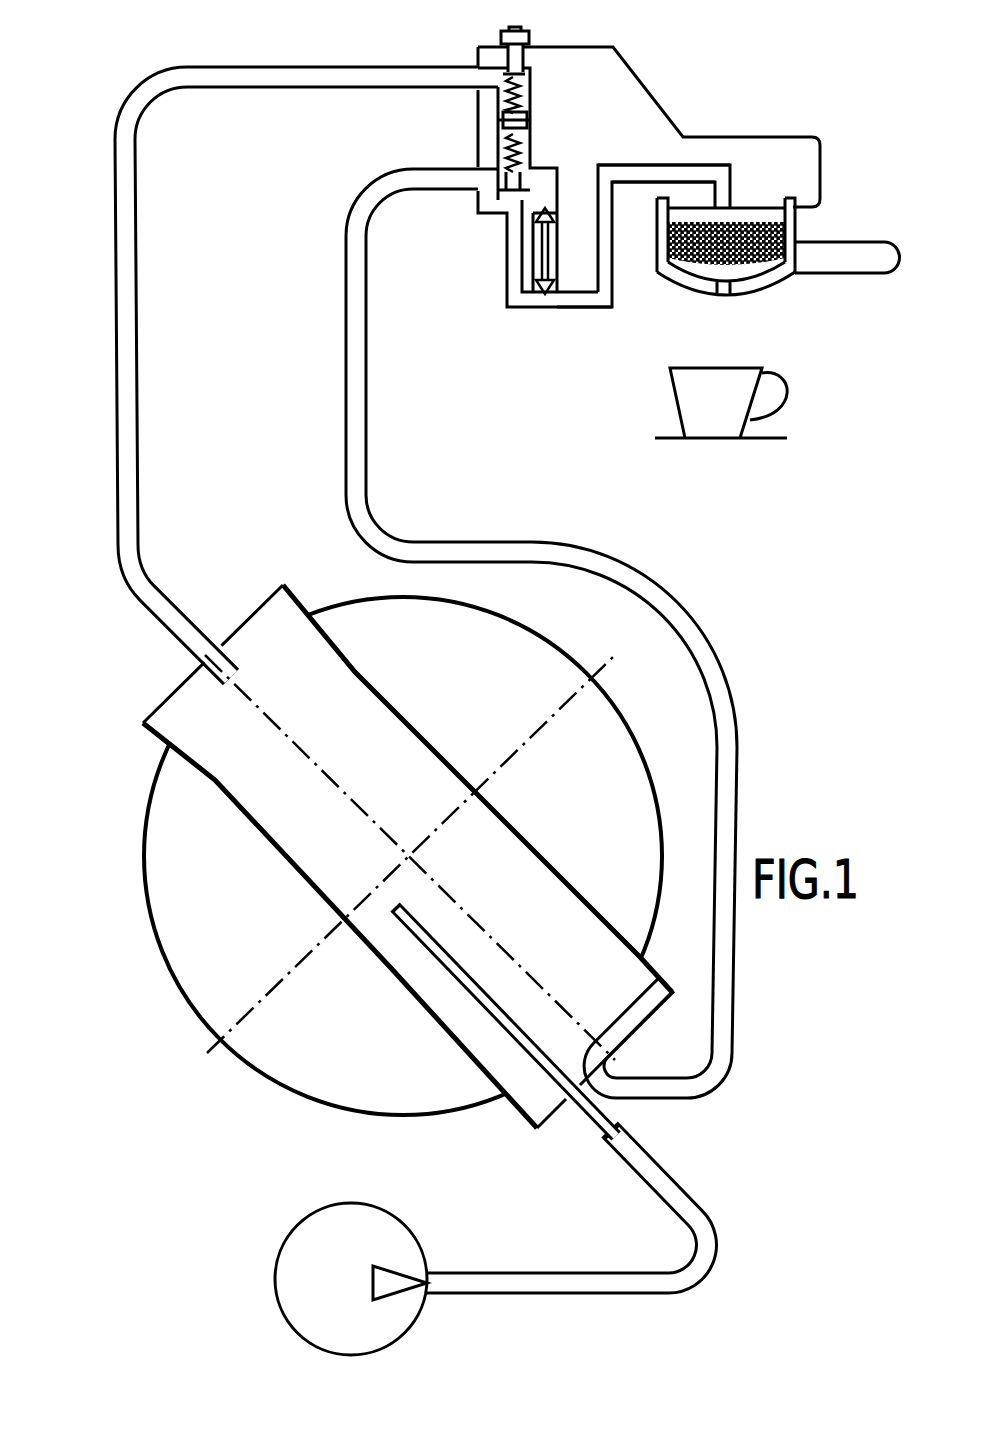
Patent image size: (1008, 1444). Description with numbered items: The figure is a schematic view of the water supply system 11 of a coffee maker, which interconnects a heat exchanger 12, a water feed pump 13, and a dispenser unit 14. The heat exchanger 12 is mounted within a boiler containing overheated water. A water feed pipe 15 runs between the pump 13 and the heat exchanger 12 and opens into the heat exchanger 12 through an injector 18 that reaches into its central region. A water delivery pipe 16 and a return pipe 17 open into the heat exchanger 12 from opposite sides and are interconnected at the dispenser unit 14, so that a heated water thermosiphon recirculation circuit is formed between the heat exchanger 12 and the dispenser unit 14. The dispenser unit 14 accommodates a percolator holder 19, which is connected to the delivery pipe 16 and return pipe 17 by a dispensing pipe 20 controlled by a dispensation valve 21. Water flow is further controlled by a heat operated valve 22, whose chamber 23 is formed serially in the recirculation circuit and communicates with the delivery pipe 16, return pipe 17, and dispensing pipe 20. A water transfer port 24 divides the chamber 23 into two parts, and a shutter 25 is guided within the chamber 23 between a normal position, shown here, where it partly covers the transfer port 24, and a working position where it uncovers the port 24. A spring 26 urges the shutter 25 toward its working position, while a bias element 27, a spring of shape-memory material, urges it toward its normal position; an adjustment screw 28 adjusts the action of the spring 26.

The water supply system 11 is at (165, 663).
The heat exchanger 12 is at (297, 870).
The water feed pump 13 is at (303, 1229).
The dispenser unit 14 is at (643, 126).
The water feed pipe 15 is at (700, 1221).
The water delivery pipe 16 is at (208, 67).
The return pipe 17 is at (735, 739).
The injector 18 is at (455, 976).
The percolator holder 19 is at (768, 255).
The dispensing pipe 20 is at (697, 176).
The dispensation valve 21 is at (546, 292).
The heat operated valve 22 is at (460, 104).
The chamber 23 is at (503, 176).
The water transfer port 24 is at (500, 122).
The shutter 25 is at (530, 118).
The spring 26 is at (530, 84).
The bias element 27 is at (522, 182).
The adjustment screw 28 is at (529, 37).